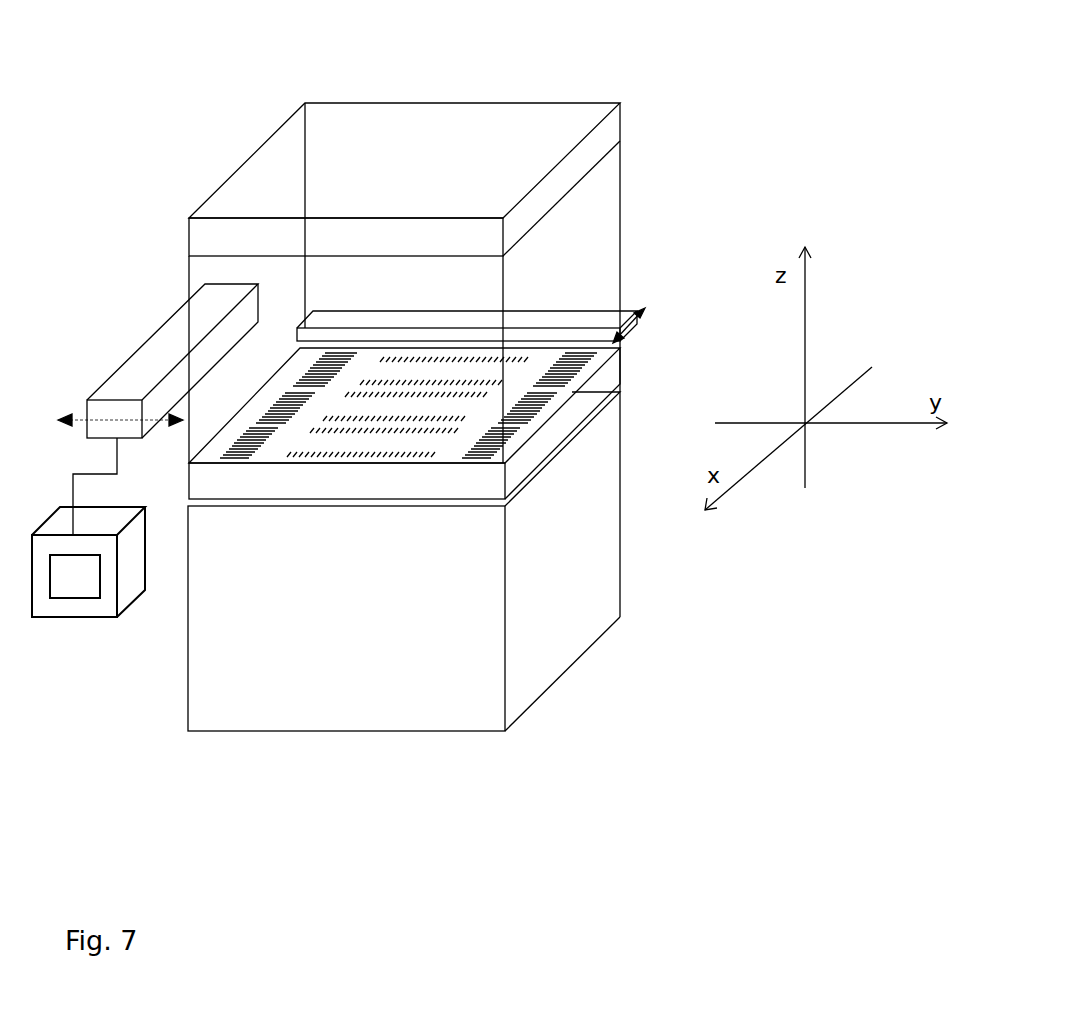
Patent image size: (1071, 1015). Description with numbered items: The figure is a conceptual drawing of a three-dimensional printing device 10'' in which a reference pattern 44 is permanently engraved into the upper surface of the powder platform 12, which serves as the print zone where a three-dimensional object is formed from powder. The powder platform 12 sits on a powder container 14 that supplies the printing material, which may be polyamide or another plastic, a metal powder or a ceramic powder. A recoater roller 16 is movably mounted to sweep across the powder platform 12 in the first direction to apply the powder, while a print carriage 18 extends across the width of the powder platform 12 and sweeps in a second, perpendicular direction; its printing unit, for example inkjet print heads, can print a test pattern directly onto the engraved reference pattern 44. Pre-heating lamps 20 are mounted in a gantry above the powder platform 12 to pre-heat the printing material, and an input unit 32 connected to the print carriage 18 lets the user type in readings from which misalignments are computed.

The 3d printing device 10'' is at (374, 366).
The pre-heating lamps 20 is at (608, 133).
The recoater roller 16 is at (603, 317).
The powder platform 12 is at (596, 369).
The reference pattern 44 is at (343, 437).
The powder container 14 is at (188, 628).
The print carriage 18 is at (150, 333).
The input unit 32 is at (70, 618).